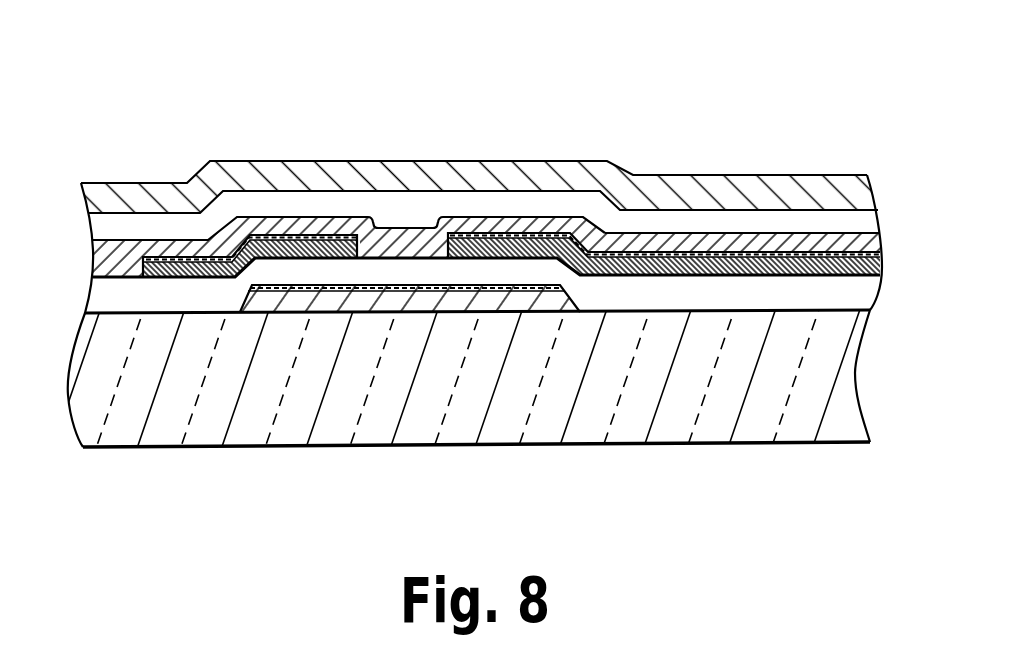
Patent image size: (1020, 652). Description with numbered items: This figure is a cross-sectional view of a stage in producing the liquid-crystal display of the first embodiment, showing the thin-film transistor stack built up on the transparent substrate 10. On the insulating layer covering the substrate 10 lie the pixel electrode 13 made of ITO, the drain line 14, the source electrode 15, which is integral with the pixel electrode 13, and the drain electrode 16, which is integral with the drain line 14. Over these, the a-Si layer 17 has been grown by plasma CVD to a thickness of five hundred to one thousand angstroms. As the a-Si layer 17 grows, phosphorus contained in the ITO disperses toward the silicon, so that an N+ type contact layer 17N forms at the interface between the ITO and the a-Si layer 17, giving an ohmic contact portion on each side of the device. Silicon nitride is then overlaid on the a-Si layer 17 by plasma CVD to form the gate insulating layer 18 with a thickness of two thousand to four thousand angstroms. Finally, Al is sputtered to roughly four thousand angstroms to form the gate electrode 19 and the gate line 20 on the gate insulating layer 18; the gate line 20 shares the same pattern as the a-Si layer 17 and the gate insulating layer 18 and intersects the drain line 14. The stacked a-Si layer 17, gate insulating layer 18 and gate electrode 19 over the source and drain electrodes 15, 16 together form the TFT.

The transparent substrate 10 is at (795, 403).
The pixel electrode 13 is at (810, 250).
The drain line 14 is at (152, 263).
The source electrode 15 is at (537, 242).
The drain electrode 16 is at (289, 250).
The a-Si layer 17 is at (480, 222).
The N+ type contact layer 17N is at (245, 243).
The gate insulating layer 18 is at (420, 213).
The gate electrode 19 is at (479, 106).
The gate line 20 is at (372, 178).